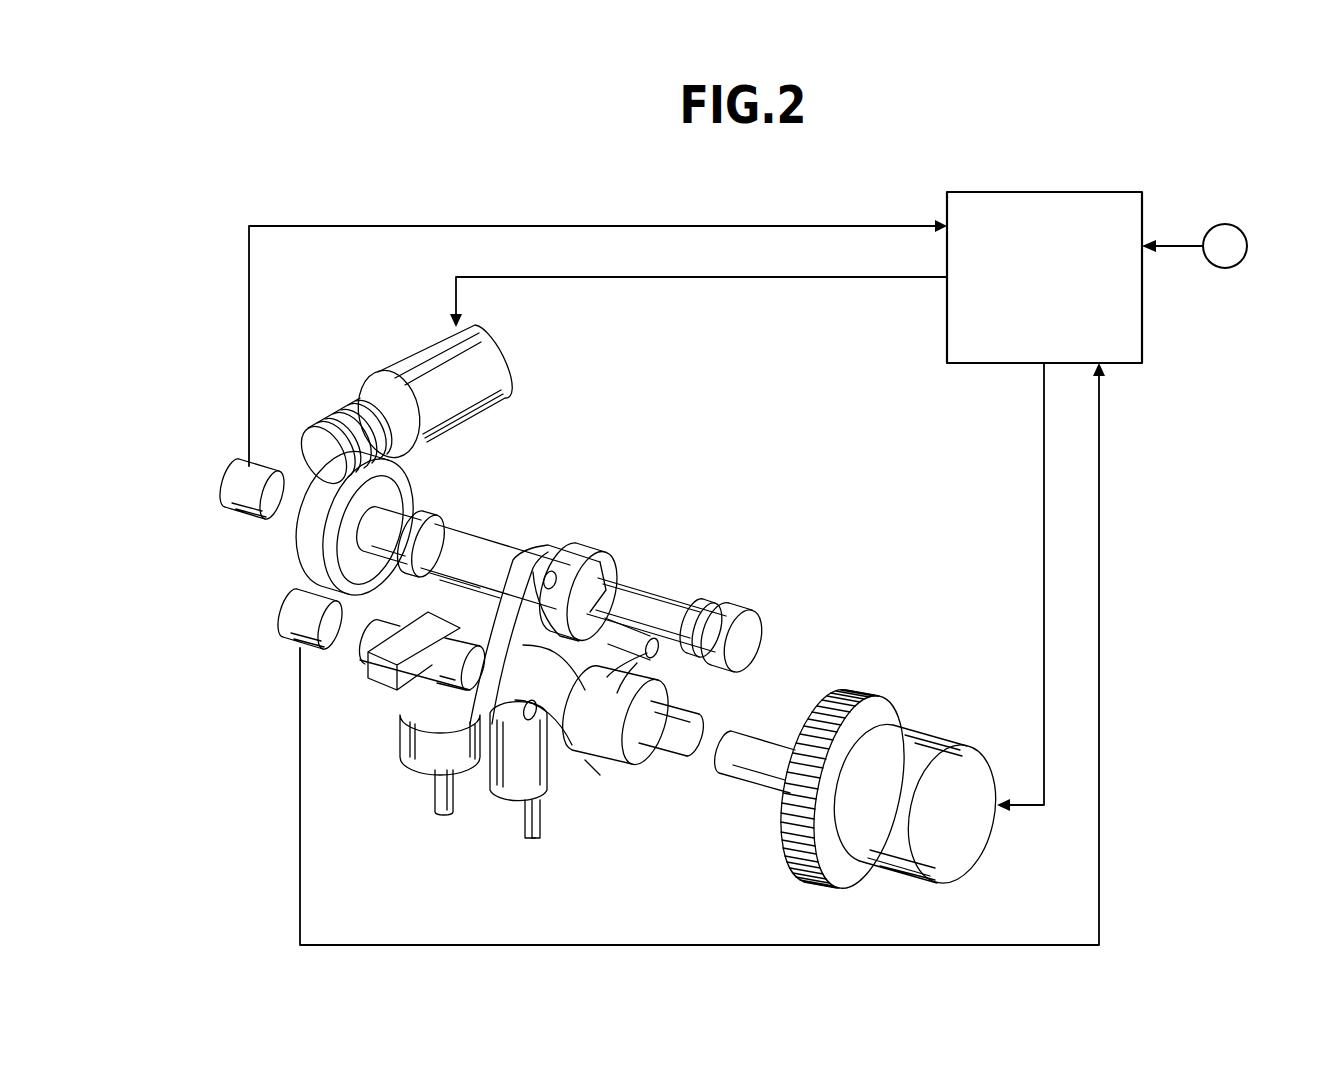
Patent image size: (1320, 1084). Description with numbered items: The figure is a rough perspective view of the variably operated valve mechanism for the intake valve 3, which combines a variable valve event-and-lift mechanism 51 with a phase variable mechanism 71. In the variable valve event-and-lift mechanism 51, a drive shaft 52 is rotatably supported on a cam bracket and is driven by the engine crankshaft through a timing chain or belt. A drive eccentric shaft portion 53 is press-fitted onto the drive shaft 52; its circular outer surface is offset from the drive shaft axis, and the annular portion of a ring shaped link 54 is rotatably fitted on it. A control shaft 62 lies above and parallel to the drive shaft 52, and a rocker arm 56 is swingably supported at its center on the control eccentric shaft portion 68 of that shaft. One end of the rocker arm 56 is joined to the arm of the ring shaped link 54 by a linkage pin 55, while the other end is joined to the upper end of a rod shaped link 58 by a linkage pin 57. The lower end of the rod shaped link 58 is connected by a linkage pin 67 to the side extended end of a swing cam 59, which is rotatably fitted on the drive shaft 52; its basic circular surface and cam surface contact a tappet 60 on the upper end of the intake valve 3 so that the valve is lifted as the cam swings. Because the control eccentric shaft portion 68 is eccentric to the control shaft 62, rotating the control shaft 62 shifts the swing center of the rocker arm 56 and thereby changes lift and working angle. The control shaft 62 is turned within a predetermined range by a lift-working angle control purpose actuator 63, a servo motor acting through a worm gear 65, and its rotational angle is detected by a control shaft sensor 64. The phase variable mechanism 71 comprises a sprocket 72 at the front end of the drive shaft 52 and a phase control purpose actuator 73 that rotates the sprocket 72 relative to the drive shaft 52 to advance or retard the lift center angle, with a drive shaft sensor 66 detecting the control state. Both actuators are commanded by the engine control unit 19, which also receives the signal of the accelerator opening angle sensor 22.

The intake valve 3 is at (525, 810).
The engine control unit 19 is at (947, 326).
The accelerator opening angle sensor 22 is at (1194, 246).
The variable valve event-and-lift mechanism 51 is at (600, 527).
The drive shaft 52 is at (685, 745).
The drive eccentric shaft portion 53 is at (587, 767).
The ring shaped link 54 is at (550, 773).
The linkage pin 55 is at (655, 652).
The rocker arm 56 is at (598, 565).
The linkage pin 57 is at (554, 570).
The rod shaped link 58 is at (493, 775).
The swing cam 59 is at (450, 707).
The tappet 60 is at (520, 783).
The control shaft 62 is at (470, 547).
The lift-working angle control purpose actuator 63 is at (477, 382).
The control shaft sensor 64 is at (240, 493).
The worm gear 65 is at (352, 410).
The drive shaft sensor 66 is at (293, 613).
The linkage pin 67 is at (577, 765).
The control eccentric shaft portion 68 is at (587, 628).
The phase variable mechanism 71 is at (900, 748).
The sprocket 72 is at (808, 865).
The phase control purpose actuator 73 is at (970, 835).